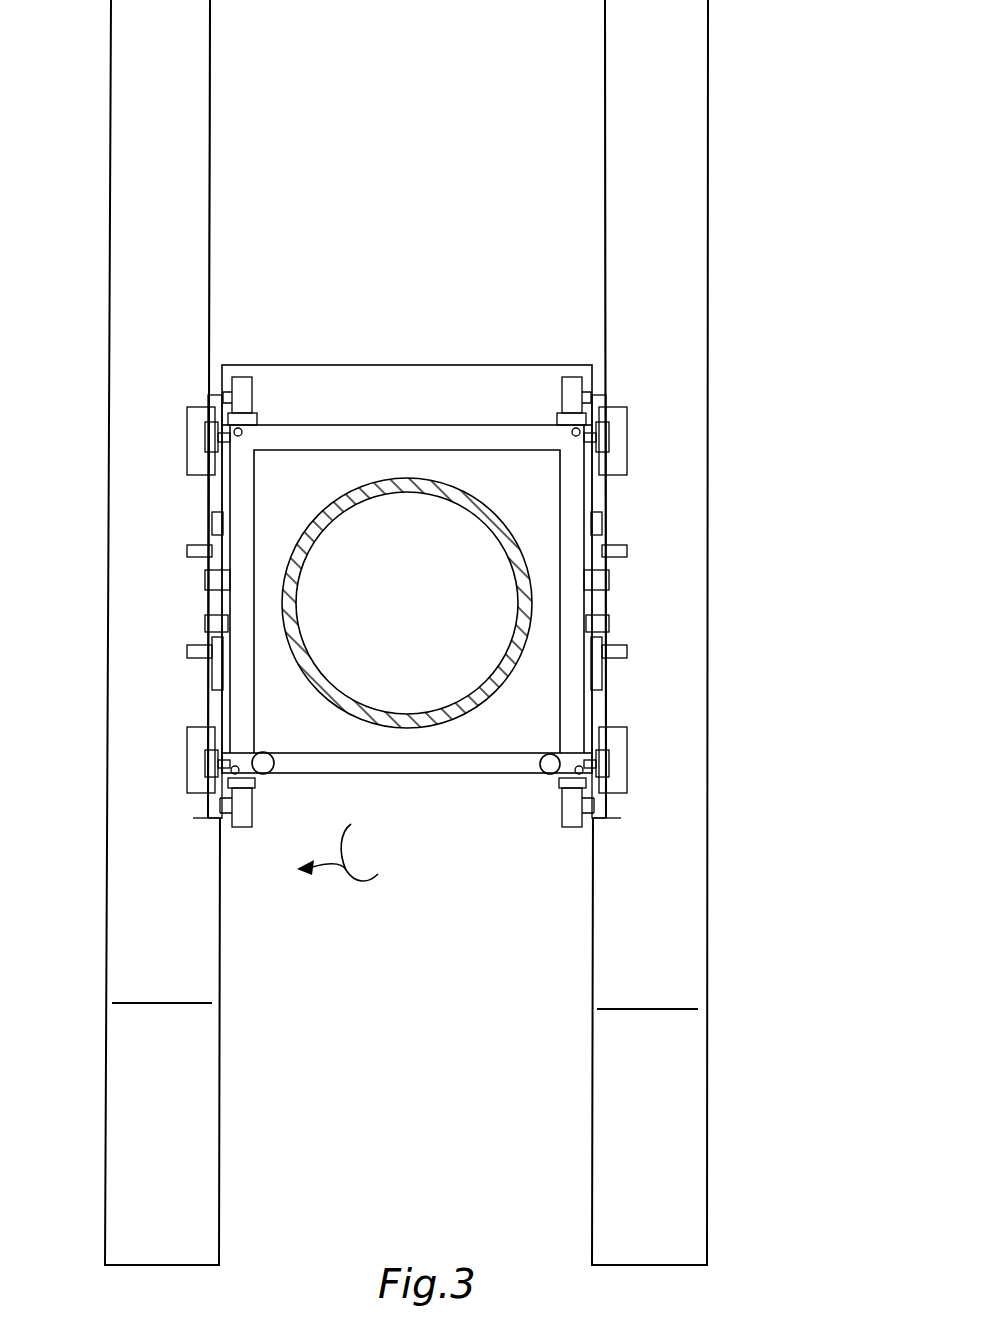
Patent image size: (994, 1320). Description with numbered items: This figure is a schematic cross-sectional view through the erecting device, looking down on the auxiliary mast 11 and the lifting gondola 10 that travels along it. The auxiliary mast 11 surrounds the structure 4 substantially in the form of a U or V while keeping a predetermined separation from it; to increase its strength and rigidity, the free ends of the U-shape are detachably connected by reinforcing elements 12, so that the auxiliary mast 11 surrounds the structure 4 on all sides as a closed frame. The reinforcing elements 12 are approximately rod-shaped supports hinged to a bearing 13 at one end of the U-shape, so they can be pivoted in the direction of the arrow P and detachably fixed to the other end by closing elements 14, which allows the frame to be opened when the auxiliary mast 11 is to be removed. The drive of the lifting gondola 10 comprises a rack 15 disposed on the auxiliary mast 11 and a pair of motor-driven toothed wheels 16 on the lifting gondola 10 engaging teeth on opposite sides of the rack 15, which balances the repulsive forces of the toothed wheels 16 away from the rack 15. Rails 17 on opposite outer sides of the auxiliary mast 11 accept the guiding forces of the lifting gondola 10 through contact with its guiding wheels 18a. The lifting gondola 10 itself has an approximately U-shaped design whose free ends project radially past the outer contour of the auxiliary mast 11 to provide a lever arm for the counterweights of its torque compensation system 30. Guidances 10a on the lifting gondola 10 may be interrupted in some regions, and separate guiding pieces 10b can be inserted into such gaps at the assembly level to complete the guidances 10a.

The structure 4 is at (292, 578).
The lifting gondola 10 is at (690, 133).
The guidances 10a is at (606, 132).
The guiding pieces 10b is at (196, 458).
The auxiliary mast 11 is at (424, 405).
The reinforcing elements 12 is at (463, 766).
The bearing 13 is at (270, 776).
The closing elements 14 is at (547, 774).
The rack 15 is at (212, 606).
The toothed wheel 16 is at (212, 544).
The rails 17 is at (234, 416).
The guiding wheels 18a is at (243, 382).
The torque compensation system 30 is at (180, 1107).
The arrow P is at (350, 862).